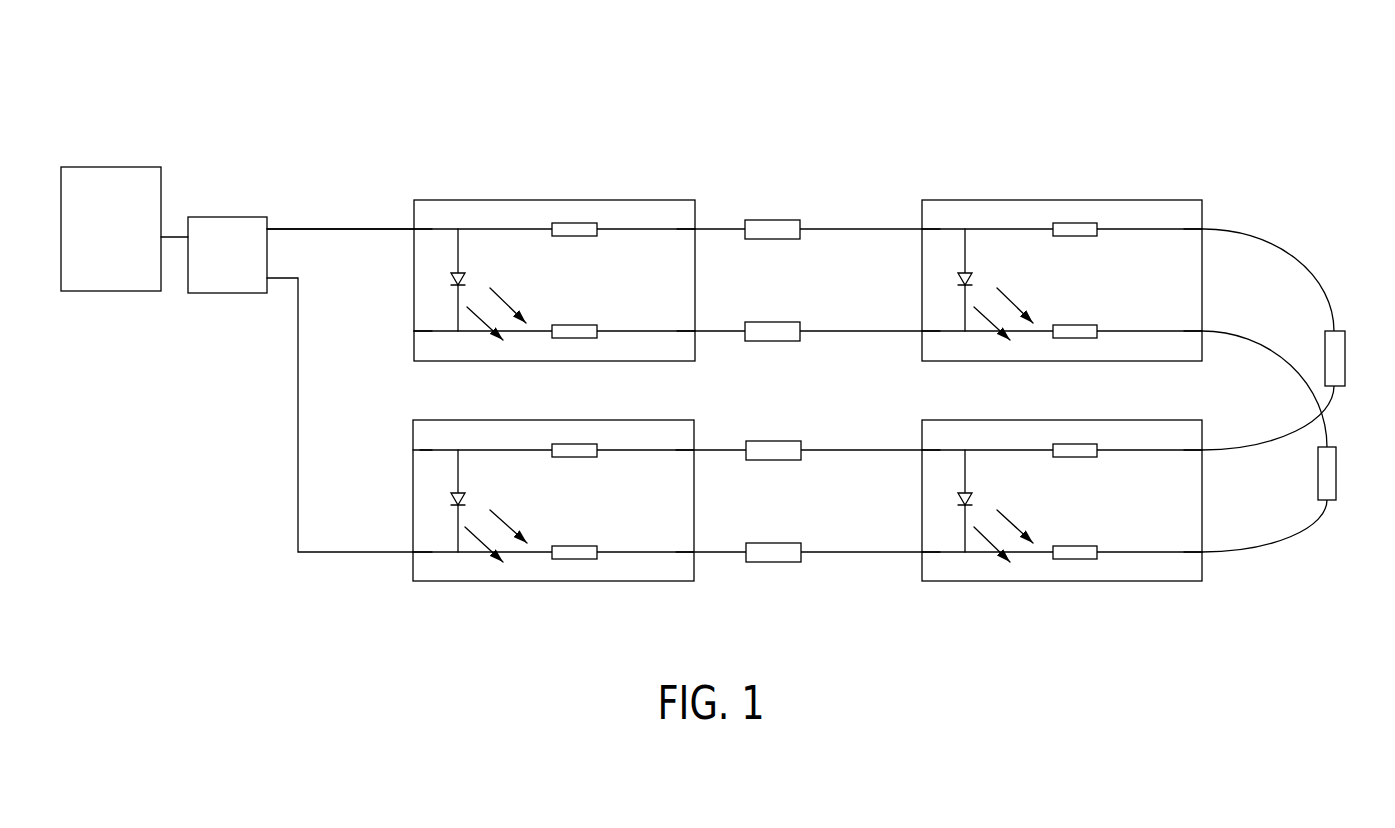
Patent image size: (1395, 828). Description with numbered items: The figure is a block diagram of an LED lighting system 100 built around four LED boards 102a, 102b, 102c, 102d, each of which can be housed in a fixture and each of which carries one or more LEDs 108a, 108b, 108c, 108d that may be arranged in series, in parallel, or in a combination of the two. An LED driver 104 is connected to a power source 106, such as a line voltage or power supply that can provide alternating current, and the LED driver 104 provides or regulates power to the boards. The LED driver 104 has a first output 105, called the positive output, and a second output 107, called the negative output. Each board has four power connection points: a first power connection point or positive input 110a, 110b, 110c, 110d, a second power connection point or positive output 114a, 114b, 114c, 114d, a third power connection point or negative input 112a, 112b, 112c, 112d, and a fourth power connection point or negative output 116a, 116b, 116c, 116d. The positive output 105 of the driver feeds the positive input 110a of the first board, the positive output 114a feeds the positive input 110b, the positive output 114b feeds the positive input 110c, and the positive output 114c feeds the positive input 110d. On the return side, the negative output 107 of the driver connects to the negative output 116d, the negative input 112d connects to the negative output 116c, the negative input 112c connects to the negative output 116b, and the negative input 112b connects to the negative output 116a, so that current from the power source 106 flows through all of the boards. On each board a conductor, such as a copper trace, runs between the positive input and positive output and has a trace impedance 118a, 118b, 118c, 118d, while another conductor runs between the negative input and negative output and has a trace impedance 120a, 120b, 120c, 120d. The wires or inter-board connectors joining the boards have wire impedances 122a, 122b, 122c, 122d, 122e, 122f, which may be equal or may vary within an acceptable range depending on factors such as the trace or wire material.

The LED lighting system 100 is at (1150, 98).
The LED board 102a is at (547, 261).
The LED board 102b is at (1061, 262).
The LED board 102c is at (1061, 506).
The LED board 102d is at (550, 506).
The LED driver 104 is at (228, 217).
The first output 105 is at (268, 237).
The power source 106 is at (108, 167).
The second output 107 is at (268, 292).
The LED 108a is at (468, 277).
The LED 108b is at (975, 277).
The LED 108c is at (975, 497).
The LED 108d is at (468, 497).
The first power connection point 110a is at (410, 240).
The first power connection point 110b is at (914, 241).
The first power connection point 110c is at (1207, 461).
The first power connection point 110d is at (700, 461).
The third power connection point 112a is at (410, 333).
The third power connection point 112b is at (914, 341).
The third power connection point 112c is at (1207, 561).
The third power connection point 112d is at (700, 561).
The second power connection point 114a is at (700, 241).
The second power connection point 114b is at (1207, 241).
The second power connection point 114c is at (914, 461).
The second power connection point 114d is at (410, 458).
The fourth power connection point 116a is at (700, 341).
The fourth power connection point 116b is at (1207, 341).
The fourth power connection point 116c is at (914, 561).
The fourth power connection point 116d is at (410, 562).
The trace impedance 118a is at (573, 222).
The trace impedance 118b is at (1073, 222).
The trace impedance 118c is at (1075, 443).
The trace impedance 118d is at (573, 443).
The trace impedance 120a is at (575, 325).
The trace impedance 120b is at (1075, 325).
The trace impedance 120c is at (1075, 546).
The trace impedance 120d is at (575, 546).
The wire impedance 122a is at (773, 220).
The wire impedance 122b is at (787, 322).
The wire impedance 122c is at (1337, 331).
The wire impedance 122d is at (1330, 447).
The wire impedance 122e is at (787, 441).
The wire impedance 122f is at (787, 543).